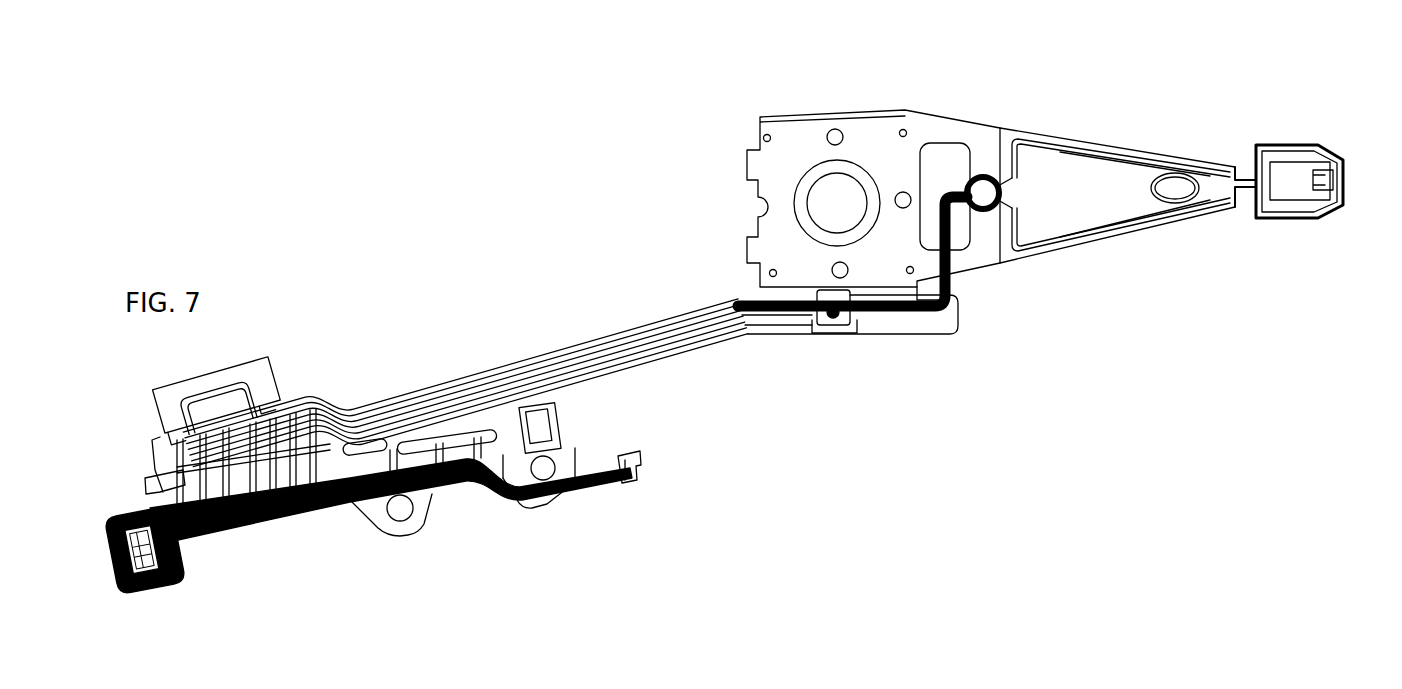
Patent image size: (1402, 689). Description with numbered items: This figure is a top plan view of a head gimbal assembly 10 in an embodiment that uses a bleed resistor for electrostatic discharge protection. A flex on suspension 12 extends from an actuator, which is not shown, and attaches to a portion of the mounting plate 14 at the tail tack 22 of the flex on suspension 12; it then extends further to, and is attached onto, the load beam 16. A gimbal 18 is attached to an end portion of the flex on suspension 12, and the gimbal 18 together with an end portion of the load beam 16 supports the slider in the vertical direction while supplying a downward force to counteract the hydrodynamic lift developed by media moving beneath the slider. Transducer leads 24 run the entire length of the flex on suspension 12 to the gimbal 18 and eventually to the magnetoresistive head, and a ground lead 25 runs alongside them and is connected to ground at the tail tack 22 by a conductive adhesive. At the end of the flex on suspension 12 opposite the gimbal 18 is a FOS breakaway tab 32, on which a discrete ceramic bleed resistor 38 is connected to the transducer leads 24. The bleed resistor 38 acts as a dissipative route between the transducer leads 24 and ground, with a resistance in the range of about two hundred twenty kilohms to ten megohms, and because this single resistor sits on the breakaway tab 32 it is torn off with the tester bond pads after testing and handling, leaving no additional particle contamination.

The head gimbal assembly 10 is at (1320, 92).
The flex on suspension 12 is at (488, 370).
The mounting plate 14 is at (760, 133).
The load beam 16 is at (1060, 250).
The gimbal 18 is at (1307, 222).
The tail tack 22 is at (845, 328).
The transducer leads 24 is at (590, 353).
The ground lead 25 is at (775, 338).
The FOS breakaway tab 32 is at (225, 590).
The bleed resistor 38 is at (120, 522).